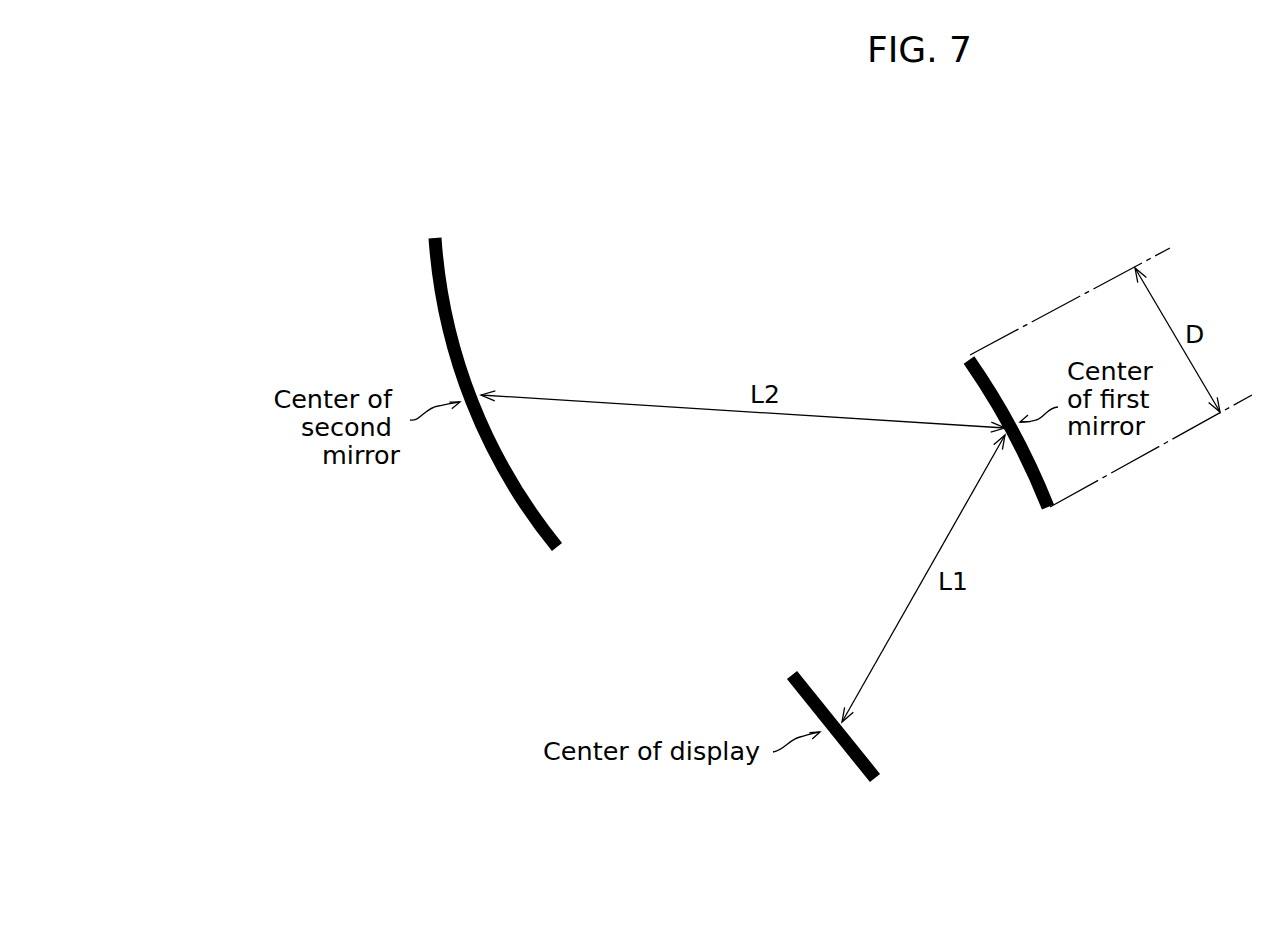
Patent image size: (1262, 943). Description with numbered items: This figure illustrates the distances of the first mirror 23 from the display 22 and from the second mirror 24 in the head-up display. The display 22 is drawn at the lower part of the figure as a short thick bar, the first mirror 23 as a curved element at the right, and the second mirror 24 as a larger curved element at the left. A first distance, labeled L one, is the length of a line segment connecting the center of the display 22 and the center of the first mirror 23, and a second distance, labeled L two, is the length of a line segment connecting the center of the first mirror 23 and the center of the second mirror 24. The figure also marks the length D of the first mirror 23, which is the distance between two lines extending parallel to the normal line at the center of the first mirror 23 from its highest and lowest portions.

The display 22 is at (850, 762).
The first mirror 23 is at (1040, 500).
The second mirror 24 is at (507, 487).